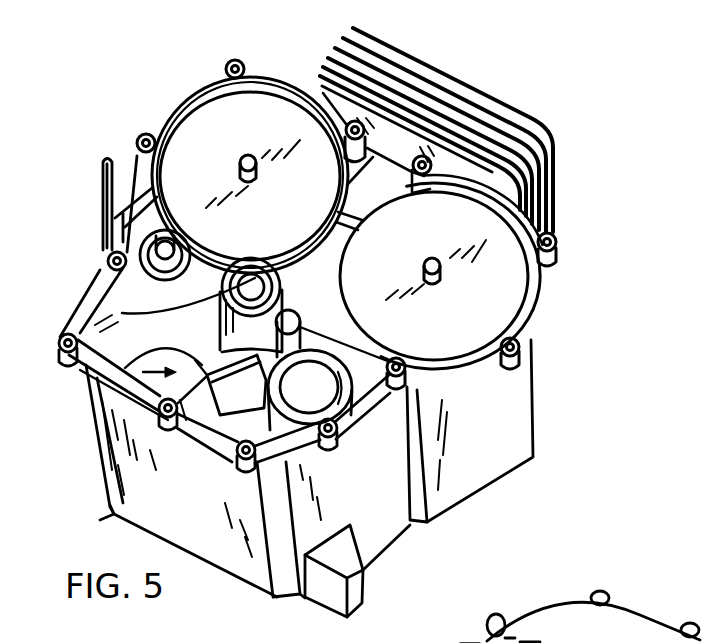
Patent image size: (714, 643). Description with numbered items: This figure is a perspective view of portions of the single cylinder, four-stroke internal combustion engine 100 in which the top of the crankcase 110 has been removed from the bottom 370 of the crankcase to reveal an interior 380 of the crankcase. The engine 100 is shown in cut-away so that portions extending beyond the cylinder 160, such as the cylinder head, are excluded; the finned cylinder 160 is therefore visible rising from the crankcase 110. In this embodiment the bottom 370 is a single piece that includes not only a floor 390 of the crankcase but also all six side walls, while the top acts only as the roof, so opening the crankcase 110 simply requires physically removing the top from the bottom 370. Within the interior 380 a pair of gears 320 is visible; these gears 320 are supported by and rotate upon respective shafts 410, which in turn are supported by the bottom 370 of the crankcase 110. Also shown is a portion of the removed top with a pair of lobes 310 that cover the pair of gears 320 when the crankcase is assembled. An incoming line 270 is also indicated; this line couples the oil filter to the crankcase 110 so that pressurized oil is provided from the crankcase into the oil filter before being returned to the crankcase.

The engine 100 is at (88, 73).
The crankcase 110 is at (93, 432).
The cylinder 160 is at (488, 60).
The incoming line 270 is at (447, 632).
The lobes 310 is at (626, 607).
The gears 320 is at (191, 110).
The bottom 370 is at (112, 509).
The interior 380 is at (102, 403).
The floor 390 is at (88, 381).
The shafts 410 is at (125, 313).